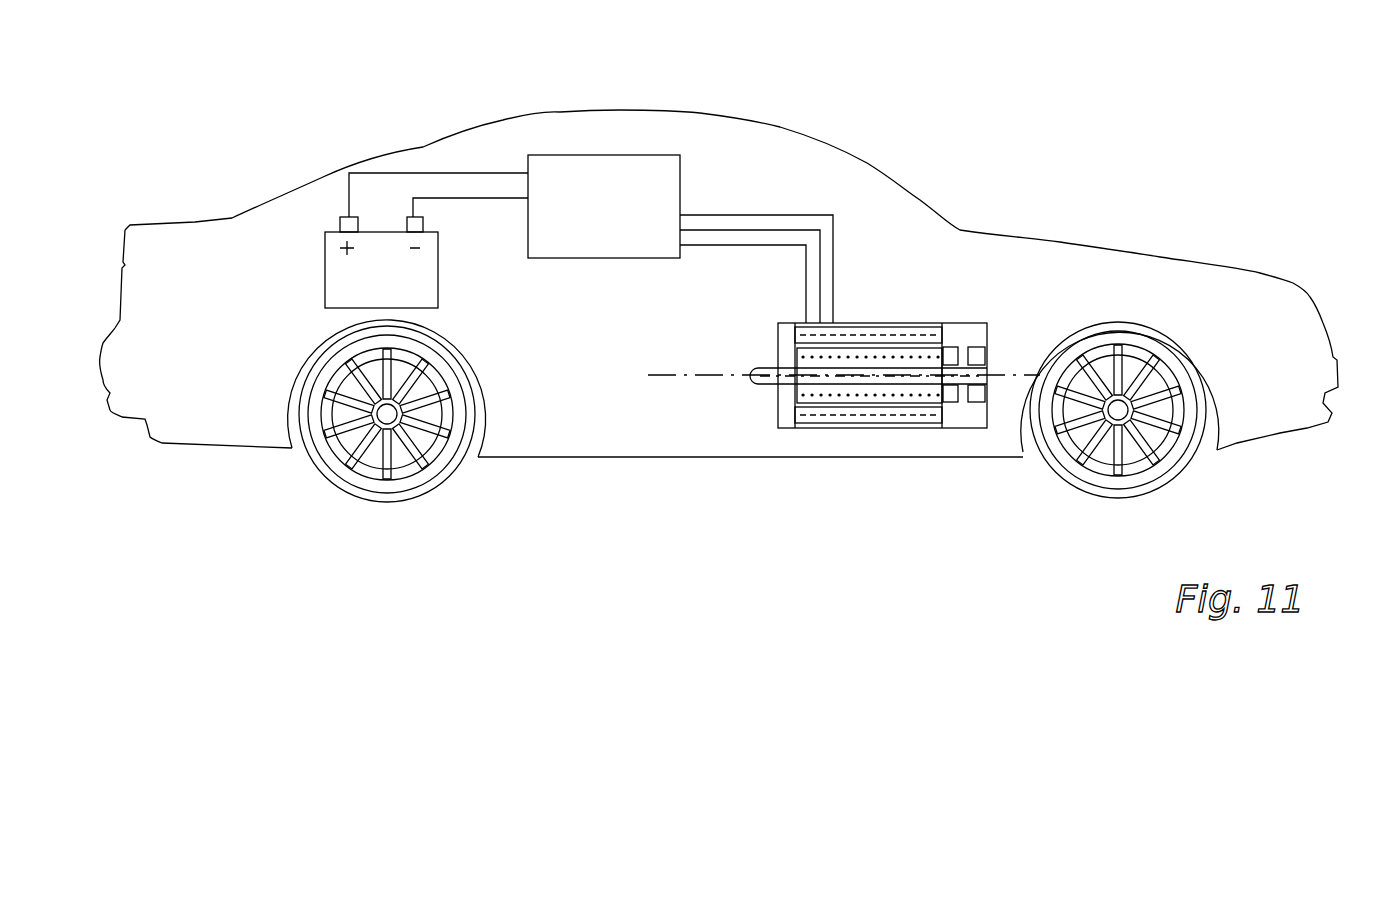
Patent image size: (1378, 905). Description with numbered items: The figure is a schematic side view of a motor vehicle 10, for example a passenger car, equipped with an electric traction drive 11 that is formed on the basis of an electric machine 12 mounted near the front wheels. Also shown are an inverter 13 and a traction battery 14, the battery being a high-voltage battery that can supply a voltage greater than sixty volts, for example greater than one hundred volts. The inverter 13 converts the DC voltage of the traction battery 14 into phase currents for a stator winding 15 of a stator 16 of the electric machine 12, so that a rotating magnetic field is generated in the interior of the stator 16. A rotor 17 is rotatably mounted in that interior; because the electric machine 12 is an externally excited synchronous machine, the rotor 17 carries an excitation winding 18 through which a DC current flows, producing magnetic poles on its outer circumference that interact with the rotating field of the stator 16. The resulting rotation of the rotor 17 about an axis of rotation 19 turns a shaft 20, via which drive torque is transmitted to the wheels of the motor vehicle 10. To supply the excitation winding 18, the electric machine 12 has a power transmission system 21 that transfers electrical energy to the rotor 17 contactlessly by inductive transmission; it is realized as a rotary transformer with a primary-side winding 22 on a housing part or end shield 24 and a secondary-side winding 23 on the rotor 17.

The motor vehicle 10 is at (735, 115).
The electric traction drive 11 is at (918, 355).
The electric machine 12 is at (994, 334).
The inverter 13 is at (600, 155).
The traction battery 14 is at (380, 232).
The stator winding 15 is at (897, 333).
The stator 16 is at (798, 410).
The rotor 17 is at (849, 337).
The excitation winding 18 is at (850, 357).
The axis of rotation 19 is at (693, 380).
The shaft 20 is at (760, 387).
The power transmission system 21 is at (992, 440).
The primary-side winding 22 is at (978, 393).
The secondary-side winding 23 is at (950, 358).
The end shield 24 is at (962, 323).